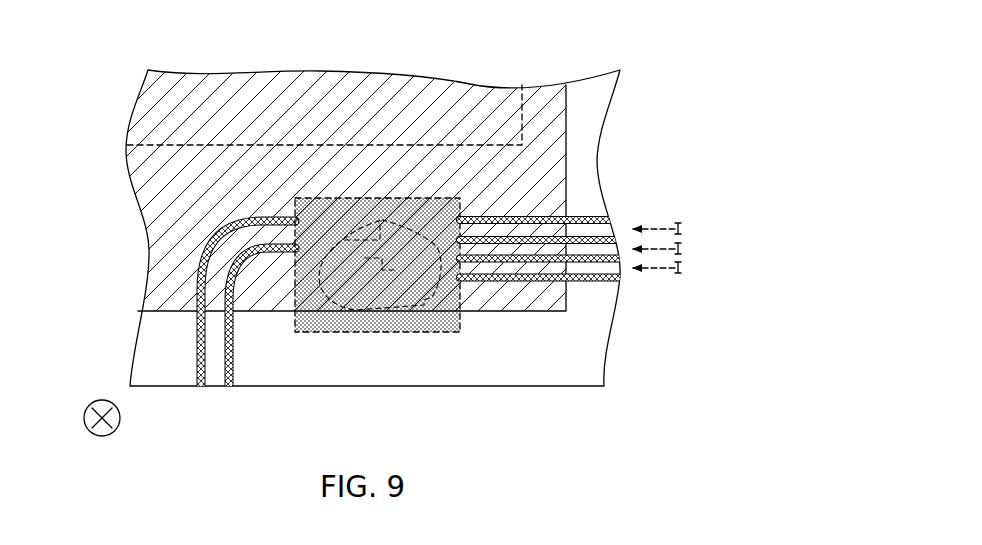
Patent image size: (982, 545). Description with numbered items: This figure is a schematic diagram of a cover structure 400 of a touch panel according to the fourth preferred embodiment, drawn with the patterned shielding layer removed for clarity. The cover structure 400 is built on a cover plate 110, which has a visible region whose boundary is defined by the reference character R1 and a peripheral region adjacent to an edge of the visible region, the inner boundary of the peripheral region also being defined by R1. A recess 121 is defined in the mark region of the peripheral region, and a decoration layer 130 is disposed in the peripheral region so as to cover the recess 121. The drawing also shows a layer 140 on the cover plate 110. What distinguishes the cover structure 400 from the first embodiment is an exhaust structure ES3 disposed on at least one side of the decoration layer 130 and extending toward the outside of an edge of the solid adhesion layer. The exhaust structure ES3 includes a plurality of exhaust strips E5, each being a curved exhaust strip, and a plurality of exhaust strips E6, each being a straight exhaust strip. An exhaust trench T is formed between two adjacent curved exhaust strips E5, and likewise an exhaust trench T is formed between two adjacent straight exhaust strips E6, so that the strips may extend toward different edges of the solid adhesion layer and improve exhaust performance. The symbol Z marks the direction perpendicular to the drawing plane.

The cover structure 400 is at (661, 58).
The cover plate 110 is at (410, 386).
The insulating layer 140 is at (548, 312).
The decoration layer 130 is at (462, 206).
The recess 121 is at (544, 216).
The boundary of the visible region R1 is at (505, 146).
The exhaust structure ES3 is at (399, 289).
The exhaust strips E5 is at (196, 352).
The exhaust strips E6 is at (616, 217).
The exhaust trench T is at (211, 390).
The Z axis direction Z is at (102, 428).